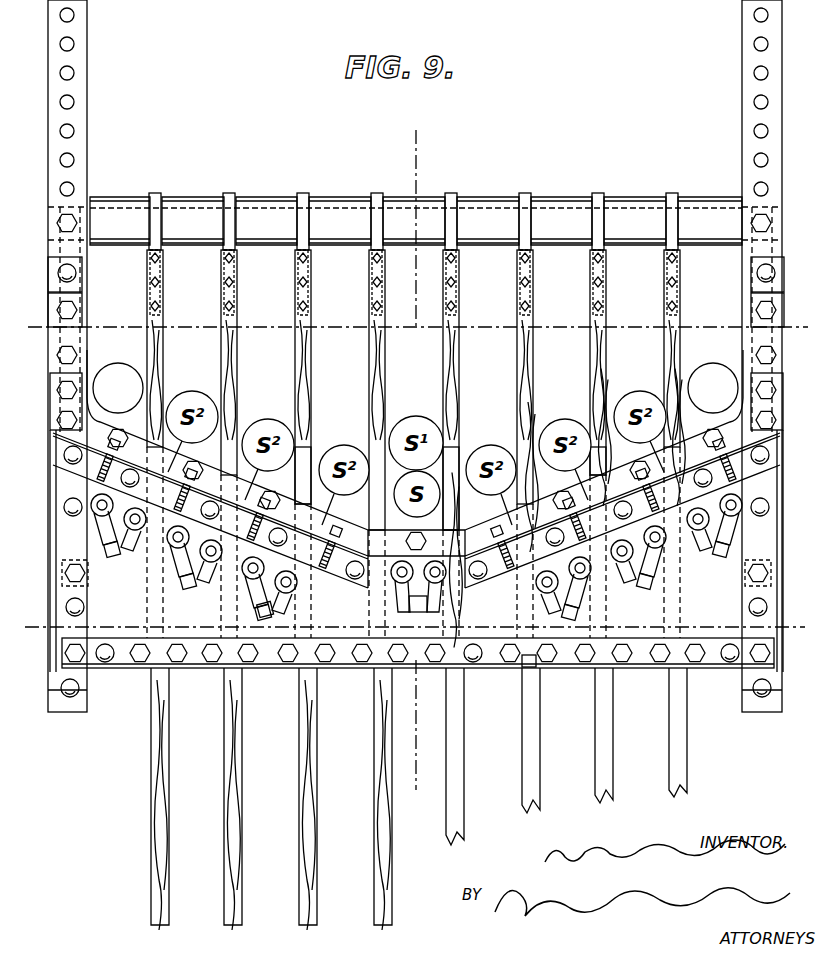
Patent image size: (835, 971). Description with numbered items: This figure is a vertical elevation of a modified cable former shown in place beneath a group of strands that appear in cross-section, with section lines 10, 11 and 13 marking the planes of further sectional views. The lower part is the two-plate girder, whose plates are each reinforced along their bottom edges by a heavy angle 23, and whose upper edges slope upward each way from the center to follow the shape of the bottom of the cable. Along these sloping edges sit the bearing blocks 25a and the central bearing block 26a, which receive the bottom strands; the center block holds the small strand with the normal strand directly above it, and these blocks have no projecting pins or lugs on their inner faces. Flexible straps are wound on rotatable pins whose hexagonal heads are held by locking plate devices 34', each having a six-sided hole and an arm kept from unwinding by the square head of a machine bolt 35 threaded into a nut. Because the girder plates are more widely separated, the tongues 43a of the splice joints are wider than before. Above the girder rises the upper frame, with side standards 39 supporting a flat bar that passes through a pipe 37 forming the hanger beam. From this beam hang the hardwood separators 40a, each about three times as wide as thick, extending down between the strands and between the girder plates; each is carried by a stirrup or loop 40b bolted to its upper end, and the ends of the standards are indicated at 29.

The side standard 39 is at (72, 90).
The pipe 37 is at (622, 222).
The stirrup or loop 40b is at (300, 222).
The wooden separator 40a is at (306, 785).
The tongue of splice joint 43a is at (138, 372).
The bearing block 25a is at (297, 452).
The center bearing block 26a is at (462, 460).
The locking plate device 34' is at (416, 600).
The machine bolt 35 is at (256, 608).
The reinforcing angle 23 is at (658, 670).
The post lower end 29 is at (85, 712).
The section line 10- 10 is at (39, 318).
The section line 11- 11 is at (40, 618).
The section line 13- 13 is at (416, 137).